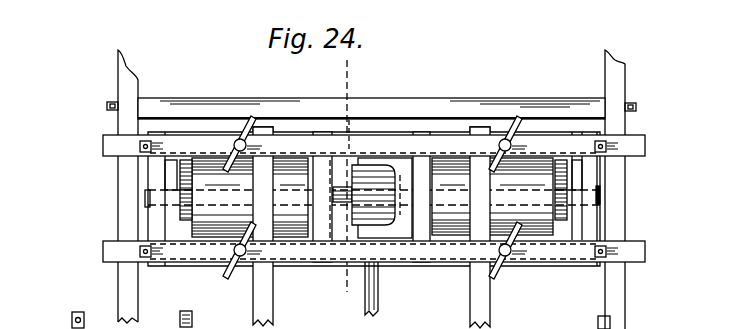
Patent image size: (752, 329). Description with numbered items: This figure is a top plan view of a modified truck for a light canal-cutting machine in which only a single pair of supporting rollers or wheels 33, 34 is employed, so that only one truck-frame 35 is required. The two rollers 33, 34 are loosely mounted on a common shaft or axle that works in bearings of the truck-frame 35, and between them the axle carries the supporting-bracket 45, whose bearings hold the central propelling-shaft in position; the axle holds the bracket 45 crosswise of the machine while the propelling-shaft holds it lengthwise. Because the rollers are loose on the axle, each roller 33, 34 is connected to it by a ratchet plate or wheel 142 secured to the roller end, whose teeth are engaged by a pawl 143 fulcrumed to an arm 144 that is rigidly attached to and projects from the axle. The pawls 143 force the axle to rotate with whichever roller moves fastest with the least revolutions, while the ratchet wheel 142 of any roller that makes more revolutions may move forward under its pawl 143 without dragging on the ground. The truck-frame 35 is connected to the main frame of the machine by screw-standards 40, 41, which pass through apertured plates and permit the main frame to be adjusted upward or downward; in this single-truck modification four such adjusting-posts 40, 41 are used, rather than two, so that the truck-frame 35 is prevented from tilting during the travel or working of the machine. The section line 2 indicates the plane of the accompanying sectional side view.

The section line 2 is at (342, 176).
The supporting-roller 33 is at (250, 197).
The supporting-roller 34 is at (492, 196).
The truck-frame 35 is at (349, 146).
The screw-standard 40 is at (246, 120).
The screw-standard 41 is at (512, 130).
The supporting-bracket 45 is at (386, 162).
The ratchet plate or wheel 142 is at (180, 210).
The pawl 143 is at (182, 165).
The arm 144 is at (178, 177).